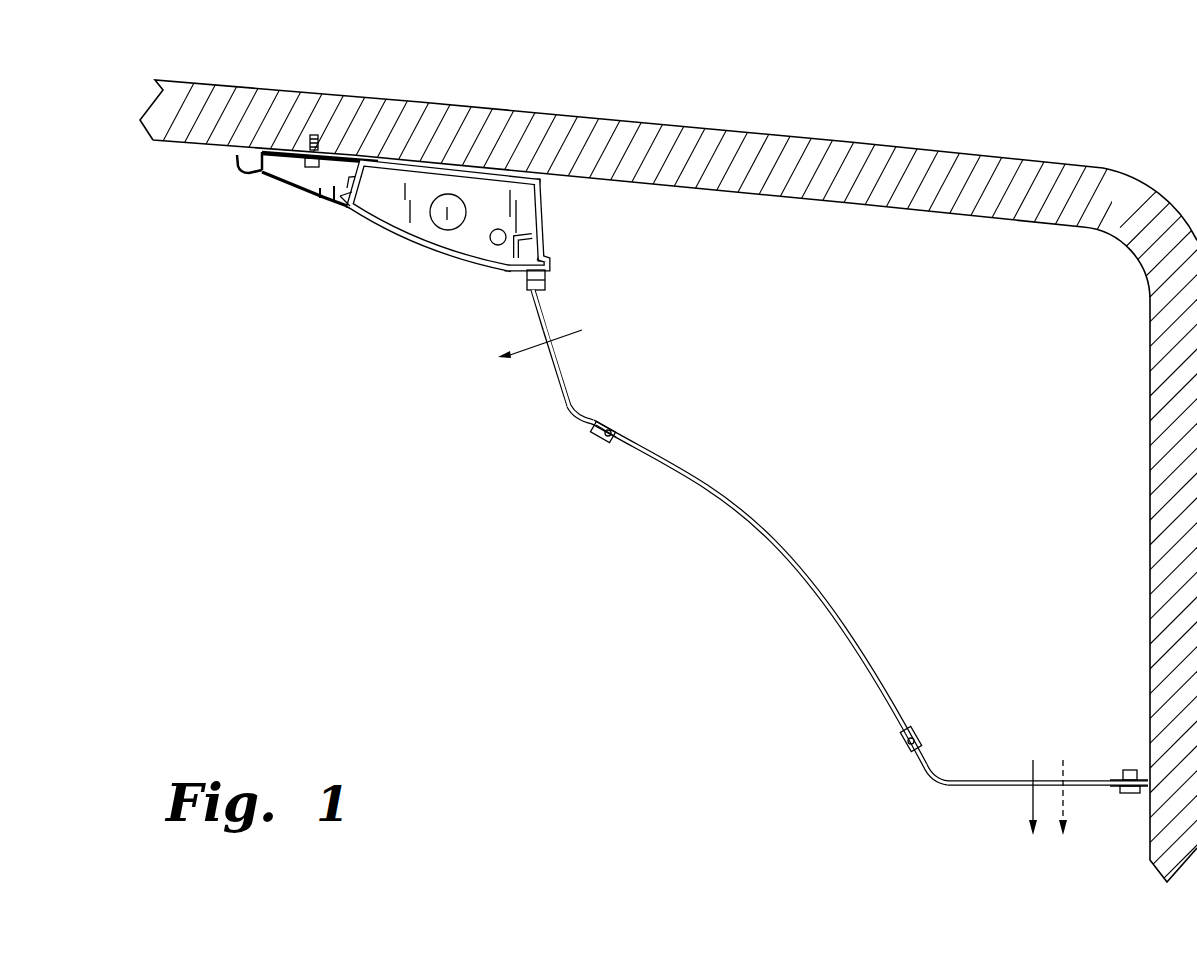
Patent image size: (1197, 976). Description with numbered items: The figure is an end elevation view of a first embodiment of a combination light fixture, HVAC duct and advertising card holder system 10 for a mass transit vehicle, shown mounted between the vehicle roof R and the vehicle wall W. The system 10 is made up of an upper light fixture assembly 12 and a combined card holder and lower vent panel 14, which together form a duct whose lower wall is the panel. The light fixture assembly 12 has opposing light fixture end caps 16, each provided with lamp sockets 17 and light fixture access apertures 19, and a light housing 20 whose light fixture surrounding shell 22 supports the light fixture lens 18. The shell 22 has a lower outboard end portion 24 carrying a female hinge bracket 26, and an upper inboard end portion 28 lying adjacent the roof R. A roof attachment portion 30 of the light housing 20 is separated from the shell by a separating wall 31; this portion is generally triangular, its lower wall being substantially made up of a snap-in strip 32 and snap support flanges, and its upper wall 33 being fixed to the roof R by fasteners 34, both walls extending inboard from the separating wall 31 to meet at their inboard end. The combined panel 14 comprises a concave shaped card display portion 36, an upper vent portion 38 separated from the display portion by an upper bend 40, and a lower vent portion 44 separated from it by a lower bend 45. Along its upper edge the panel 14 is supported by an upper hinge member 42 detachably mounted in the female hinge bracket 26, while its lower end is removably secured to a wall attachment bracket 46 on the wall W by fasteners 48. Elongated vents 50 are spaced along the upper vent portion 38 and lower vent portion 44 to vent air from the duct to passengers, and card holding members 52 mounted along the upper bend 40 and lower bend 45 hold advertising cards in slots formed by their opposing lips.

The combination light fixture/HVAC duct/advertising card holder system 10 is at (537, 652).
The upper light fixture assembly 12 is at (389, 264).
The combined card holder and lower vent panel 14 is at (660, 498).
The light fixture end cap 16 is at (380, 208).
The lamp socket 17 is at (450, 194).
The light fixture lens 18 is at (432, 243).
The light fixture access aperture 19 is at (497, 228).
The light housing 20 is at (560, 247).
The light fixture surrounding shell 22 is at (545, 228).
The lower outboard end portion 24 is at (527, 282).
The female hinge bracket 26 is at (508, 270).
The upper inboard end portion 28 is at (310, 200).
The roof attachment portion 30 is at (368, 150).
The separating wall 31 is at (405, 158).
The snap-in strip 32 is at (277, 182).
The upper wall 33 is at (253, 152).
The fastener 34 is at (309, 135).
The concave shaped card display portion 36 is at (785, 545).
The upper vent portion 38 is at (567, 373).
The upper bend 40 is at (568, 405).
The upper hinge member 42 is at (550, 298).
The lower vent portion 44 is at (985, 778).
The lower bend 45 is at (930, 792).
The wall attachment bracket 46 is at (1140, 745).
The fastener 48 is at (1120, 768).
The elongated vent 50 is at (548, 303).
The card holding member 52 is at (603, 445).
The roof R is at (742, 152).
The wall W is at (1150, 440).